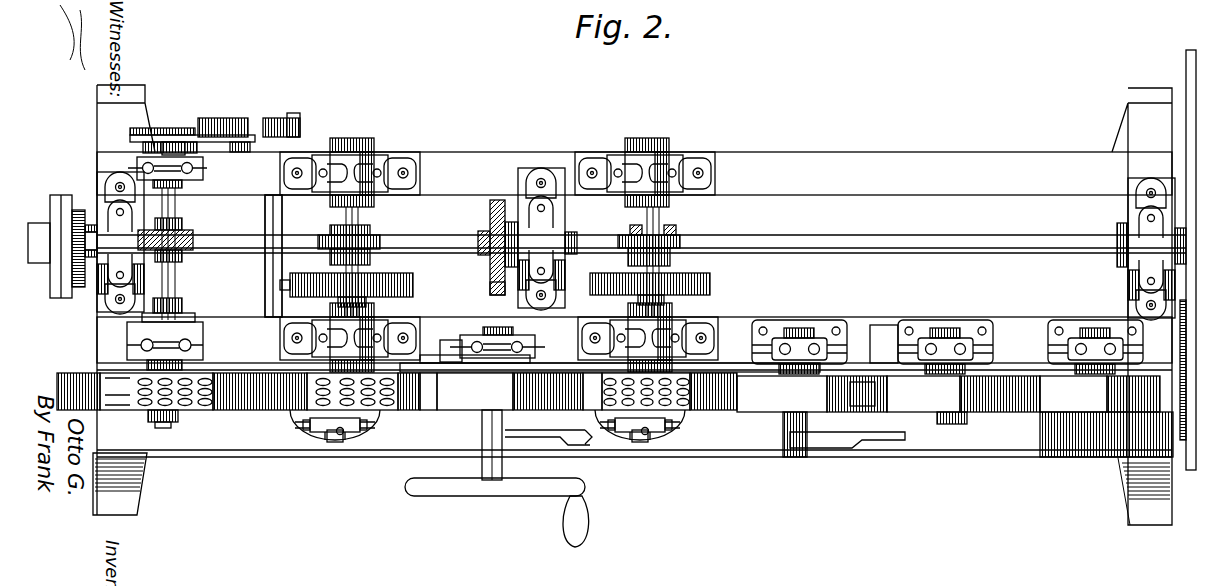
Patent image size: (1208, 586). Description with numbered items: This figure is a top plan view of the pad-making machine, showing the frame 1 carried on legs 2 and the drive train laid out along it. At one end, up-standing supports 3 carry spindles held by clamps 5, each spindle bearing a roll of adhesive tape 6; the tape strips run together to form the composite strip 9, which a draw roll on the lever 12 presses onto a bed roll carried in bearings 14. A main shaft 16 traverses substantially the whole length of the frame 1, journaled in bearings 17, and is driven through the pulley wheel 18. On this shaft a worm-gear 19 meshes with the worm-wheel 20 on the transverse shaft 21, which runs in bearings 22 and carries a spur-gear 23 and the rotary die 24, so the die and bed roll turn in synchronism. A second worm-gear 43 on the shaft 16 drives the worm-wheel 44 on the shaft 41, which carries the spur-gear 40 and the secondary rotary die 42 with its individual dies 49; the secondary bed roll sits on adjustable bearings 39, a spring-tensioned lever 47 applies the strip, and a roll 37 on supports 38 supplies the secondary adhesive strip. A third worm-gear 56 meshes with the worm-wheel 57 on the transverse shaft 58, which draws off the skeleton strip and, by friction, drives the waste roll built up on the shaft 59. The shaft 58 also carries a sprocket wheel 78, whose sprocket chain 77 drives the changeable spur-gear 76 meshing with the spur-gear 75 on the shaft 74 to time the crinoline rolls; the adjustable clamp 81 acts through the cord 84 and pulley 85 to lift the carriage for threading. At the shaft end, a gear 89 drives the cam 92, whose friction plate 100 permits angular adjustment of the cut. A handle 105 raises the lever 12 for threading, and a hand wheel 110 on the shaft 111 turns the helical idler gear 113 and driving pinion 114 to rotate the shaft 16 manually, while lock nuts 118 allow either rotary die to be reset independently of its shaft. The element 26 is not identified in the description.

The frame 1 is at (1010, 440).
The legs 2 is at (133, 95).
The up-standing supports 3 is at (920, 340).
The clamps 5 is at (790, 348).
The adhesive tape roll 6 is at (1060, 398).
The composite strip 9 is at (862, 382).
The lever 12 is at (755, 362).
The bearings 14 is at (642, 432).
The shaft 16 is at (410, 243).
The bearings 17 is at (540, 212).
The pulley wheel 18 is at (1190, 64).
The worm-gear 19 is at (675, 228).
The worm-wheel 20 is at (690, 254).
The transverse shaft 21 is at (645, 214).
The bearings 22 is at (365, 155).
The spur-gear 23 is at (705, 284).
The rotary die 24 is at (690, 410).
The bearing block 26 is at (612, 383).
The roll 37 is at (462, 396).
The upstanding supports 38 is at (525, 340).
The adjustable bearings 39 is at (335, 432).
The spur-gear 40 is at (396, 290).
The shaft 41 is at (362, 222).
The secondary rotary die 42 is at (292, 410).
The worm-gear 43 is at (332, 232).
The worm-wheel 44 is at (372, 258).
The lever 47 is at (448, 362).
The individual dies 49 is at (385, 410).
The worm-gear 56 is at (182, 233).
The worm-wheel 57 is at (185, 252).
The transverse shaft 58 is at (180, 279).
The shaft 59 is at (172, 428).
The shaft 74 is at (270, 214).
The spur-gear 75 is at (298, 118).
The spur-gear 76 is at (207, 118).
The sprocket chain 77 is at (190, 130).
The sprocket wheel 78 is at (140, 157).
The adjustable clamp 81 is at (212, 385).
The cord 84 is at (180, 346).
The pulley 85 is at (186, 318).
The gear 89 is at (88, 258).
The cam 92 is at (62, 200).
The friction plate 100 is at (47, 215).
The handle 105 is at (900, 440).
The hand wheel 110 is at (530, 492).
The shaft 111 is at (496, 286).
The helical idler gear 113 is at (490, 222).
The driving pinion 114 is at (484, 257).
The lock nuts 118 is at (345, 442).